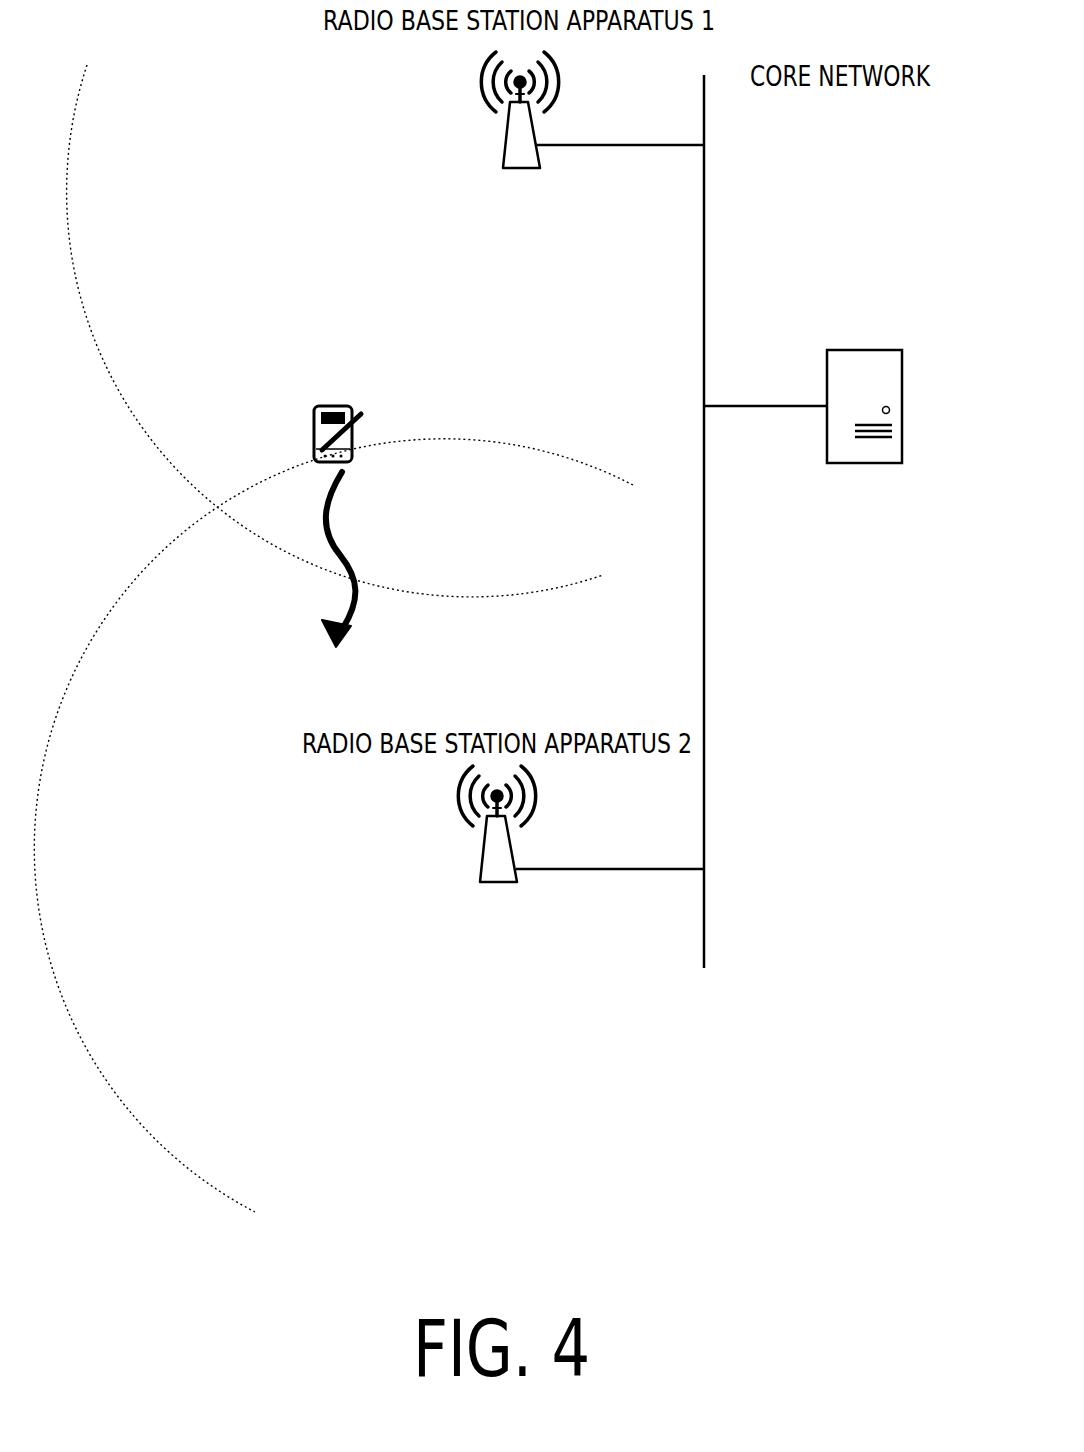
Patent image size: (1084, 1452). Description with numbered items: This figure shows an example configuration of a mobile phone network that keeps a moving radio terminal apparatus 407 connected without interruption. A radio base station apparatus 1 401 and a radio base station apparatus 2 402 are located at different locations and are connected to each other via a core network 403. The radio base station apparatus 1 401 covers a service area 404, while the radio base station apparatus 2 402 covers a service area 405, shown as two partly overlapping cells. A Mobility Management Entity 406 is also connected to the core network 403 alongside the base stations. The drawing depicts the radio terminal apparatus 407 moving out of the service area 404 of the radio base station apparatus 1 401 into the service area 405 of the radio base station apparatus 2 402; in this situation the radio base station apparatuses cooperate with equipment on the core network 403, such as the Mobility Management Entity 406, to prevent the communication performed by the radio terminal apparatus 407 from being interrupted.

The radio base station apparatus 1 401 is at (563, 120).
The radio base station apparatus 2 402 is at (528, 843).
The core network 403 is at (705, 233).
The service area 404 is at (97, 313).
The service area 405 is at (121, 690).
The Mobility Management Entity (MME) 406 is at (837, 349).
The radio terminal apparatus 407 is at (340, 395).